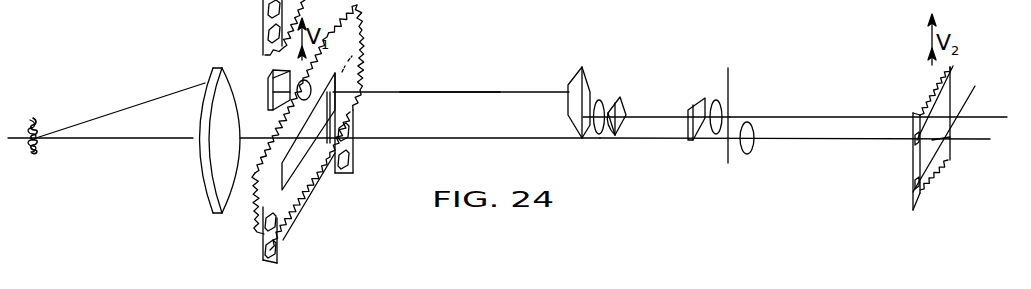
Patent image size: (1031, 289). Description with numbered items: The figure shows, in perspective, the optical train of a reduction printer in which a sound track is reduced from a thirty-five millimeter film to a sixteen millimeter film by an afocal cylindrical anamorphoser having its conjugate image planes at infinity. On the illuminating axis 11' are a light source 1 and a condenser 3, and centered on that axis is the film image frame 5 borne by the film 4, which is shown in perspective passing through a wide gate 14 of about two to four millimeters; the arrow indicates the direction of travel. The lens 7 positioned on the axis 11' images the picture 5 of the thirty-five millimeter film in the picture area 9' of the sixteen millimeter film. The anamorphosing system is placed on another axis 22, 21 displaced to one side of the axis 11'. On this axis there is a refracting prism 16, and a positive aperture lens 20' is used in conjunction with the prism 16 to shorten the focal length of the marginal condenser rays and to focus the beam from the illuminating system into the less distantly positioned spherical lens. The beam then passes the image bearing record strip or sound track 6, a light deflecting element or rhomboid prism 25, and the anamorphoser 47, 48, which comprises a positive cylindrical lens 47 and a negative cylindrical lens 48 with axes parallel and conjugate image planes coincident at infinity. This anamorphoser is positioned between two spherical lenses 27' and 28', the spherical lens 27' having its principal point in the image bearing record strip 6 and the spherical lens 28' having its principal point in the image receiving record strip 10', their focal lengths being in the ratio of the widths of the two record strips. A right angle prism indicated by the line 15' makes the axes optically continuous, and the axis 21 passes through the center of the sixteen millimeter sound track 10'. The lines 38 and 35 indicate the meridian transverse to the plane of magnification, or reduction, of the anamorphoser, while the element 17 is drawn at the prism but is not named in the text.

The light source 1 is at (116, 133).
The condenser 3 is at (217, 142).
The film 4 is at (307, 200).
The film image frame 5 is at (307, 143).
The sound track 6 is at (333, 93).
The photographic objective 7 is at (752, 151).
The picture area 9' is at (957, 127).
The sixteen millimeter sound track 10' is at (955, 121).
The axis 11' is at (304, 159).
The wide gate 14 is at (350, 32).
The right angle prism 15' is at (753, 111).
The refracting prism 16 is at (267, 87).
The mirror surface 17 is at (267, 88).
The positive aperture lens 20' is at (290, 72).
The axis 21 is at (818, 117).
The axis 22 is at (461, 92).
The rhomboid prism 25 is at (582, 85).
The spherical lens 27' is at (656, 135).
The spherical lens 28' is at (717, 136).
The meridian transverse to the plane of magnification 35 is at (345, 74).
The meridian transverse to the plane of magnification 38 is at (975, 86).
The positive cylindrical lens 47 is at (695, 97).
The negative cylindrical lens 48 is at (625, 100).